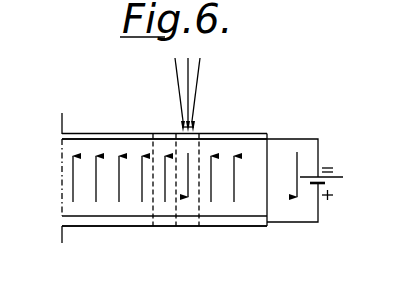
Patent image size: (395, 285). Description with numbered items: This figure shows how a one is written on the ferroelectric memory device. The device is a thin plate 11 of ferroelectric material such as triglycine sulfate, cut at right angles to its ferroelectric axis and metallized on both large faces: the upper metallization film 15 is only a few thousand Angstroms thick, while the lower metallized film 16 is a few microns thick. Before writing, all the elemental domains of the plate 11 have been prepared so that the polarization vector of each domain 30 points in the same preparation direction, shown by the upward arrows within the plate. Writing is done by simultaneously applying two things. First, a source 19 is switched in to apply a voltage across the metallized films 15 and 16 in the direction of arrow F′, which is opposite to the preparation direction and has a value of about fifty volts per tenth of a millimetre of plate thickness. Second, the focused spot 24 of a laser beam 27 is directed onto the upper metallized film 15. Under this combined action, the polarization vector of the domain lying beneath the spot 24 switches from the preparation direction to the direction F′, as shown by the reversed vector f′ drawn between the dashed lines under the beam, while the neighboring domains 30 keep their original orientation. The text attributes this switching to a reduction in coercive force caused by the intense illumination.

The laser beam 27 is at (183, 78).
The domain 30 is at (188, 150).
The focused spot 24 is at (194, 131).
The upper metallization film 15 is at (258, 137).
The plate 11 is at (120, 210).
The lower metallized film 16 is at (231, 222).
The source 19 is at (321, 180).
The polarization vector f′ is at (188, 156).
The direction of arrow F' F′ is at (267, 183).